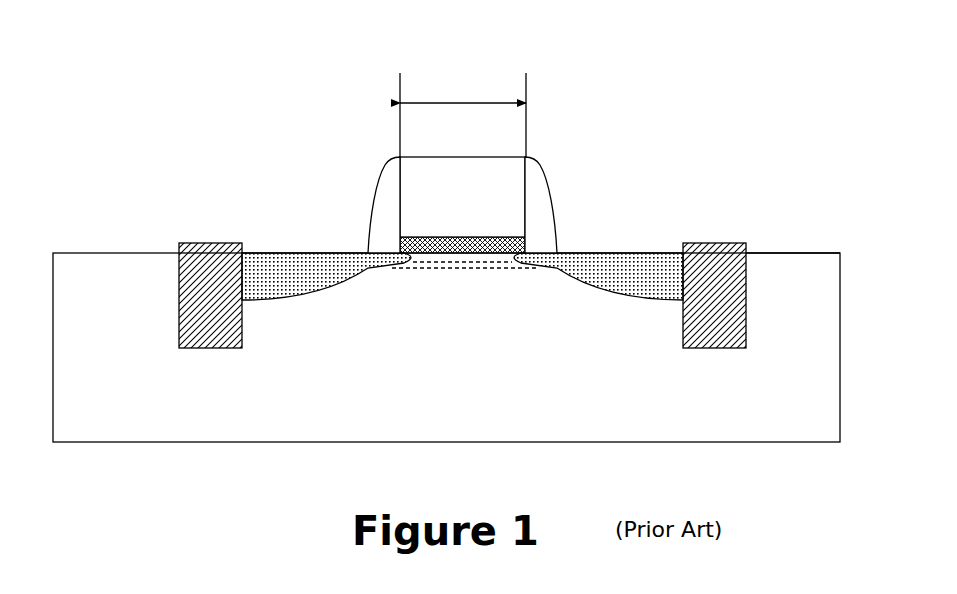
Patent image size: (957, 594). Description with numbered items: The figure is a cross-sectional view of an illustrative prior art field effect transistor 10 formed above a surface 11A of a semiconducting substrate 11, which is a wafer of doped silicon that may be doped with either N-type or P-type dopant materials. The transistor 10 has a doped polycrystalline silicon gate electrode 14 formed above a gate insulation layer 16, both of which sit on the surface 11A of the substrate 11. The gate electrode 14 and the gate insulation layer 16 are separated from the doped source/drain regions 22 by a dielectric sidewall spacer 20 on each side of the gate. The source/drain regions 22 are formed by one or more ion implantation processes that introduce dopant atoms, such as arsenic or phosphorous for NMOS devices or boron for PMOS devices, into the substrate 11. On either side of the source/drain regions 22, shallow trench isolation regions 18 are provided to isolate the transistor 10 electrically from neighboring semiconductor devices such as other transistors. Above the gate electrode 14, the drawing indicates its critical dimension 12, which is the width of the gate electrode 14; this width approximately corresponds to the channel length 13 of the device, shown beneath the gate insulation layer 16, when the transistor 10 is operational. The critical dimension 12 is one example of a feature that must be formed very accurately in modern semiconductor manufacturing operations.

The field effect transistor 10 is at (366, 128).
The semiconducting substrate 11 is at (745, 417).
The surface 11A is at (800, 252).
The critical dimension 12 is at (463, 103).
The channel length 13 is at (462, 268).
The gate electrode 14 is at (493, 189).
The gate insulation layer 16 is at (525, 236).
The shallow trench isolation regions 18 is at (220, 283).
The dielectric sidewall spacer 20 is at (385, 205).
The source/drain regions 22 is at (313, 268).